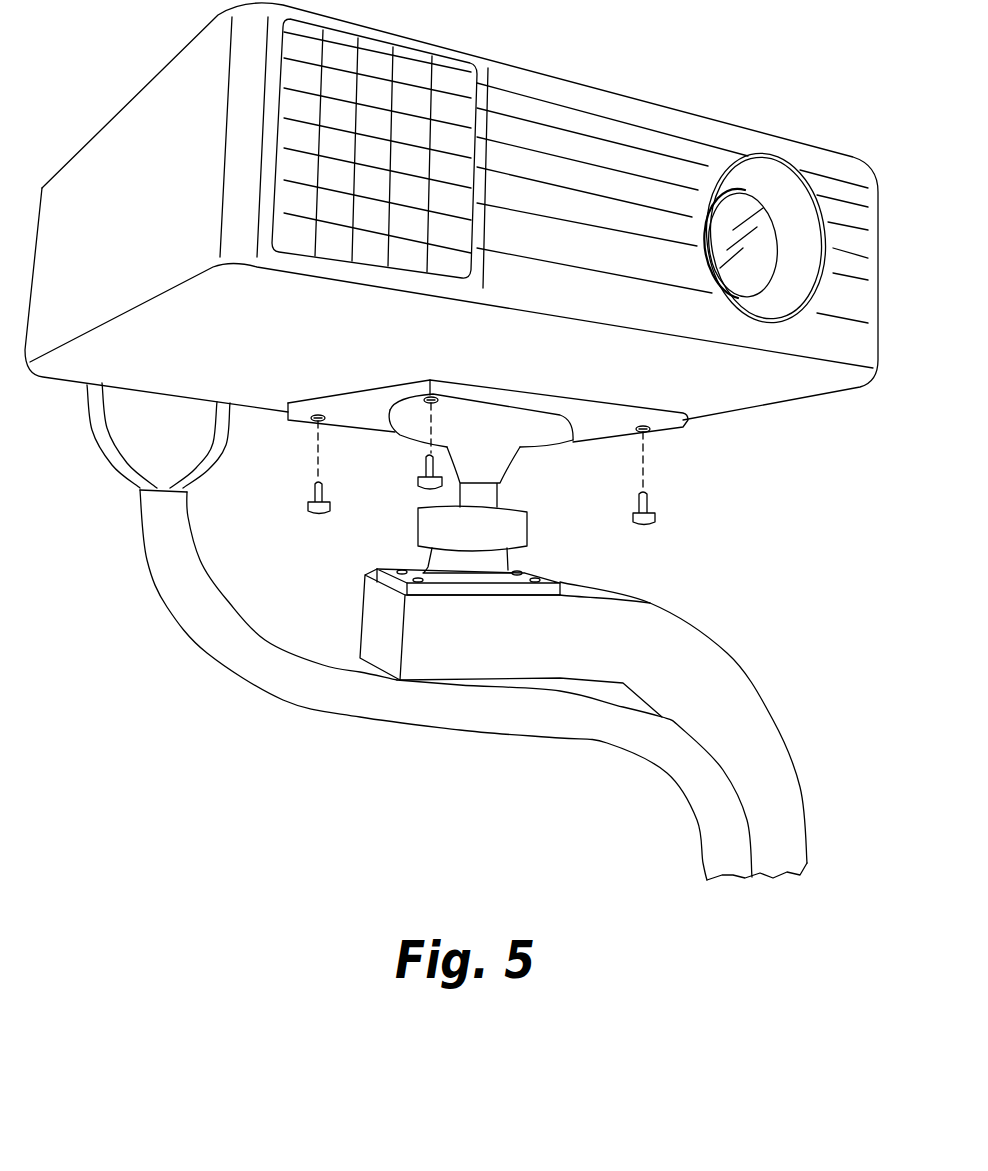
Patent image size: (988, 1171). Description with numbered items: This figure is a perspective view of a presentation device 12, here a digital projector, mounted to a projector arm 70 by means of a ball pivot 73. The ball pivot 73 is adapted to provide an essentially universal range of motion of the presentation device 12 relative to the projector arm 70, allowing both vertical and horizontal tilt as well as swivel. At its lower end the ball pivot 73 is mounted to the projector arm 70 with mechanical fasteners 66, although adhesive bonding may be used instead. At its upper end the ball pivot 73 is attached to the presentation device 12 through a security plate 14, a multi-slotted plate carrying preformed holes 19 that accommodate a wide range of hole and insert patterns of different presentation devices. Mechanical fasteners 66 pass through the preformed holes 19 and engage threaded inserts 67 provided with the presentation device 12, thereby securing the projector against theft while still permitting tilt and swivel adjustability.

The presentation device 12 is at (578, 80).
The security plate 14 is at (683, 427).
The preformed holes 19 is at (315, 422).
The mechanical fasteners 66 is at (305, 506).
The threaded inserts 67 is at (320, 397).
The projector arm 70 is at (772, 738).
The ball pivot 73 is at (527, 527).